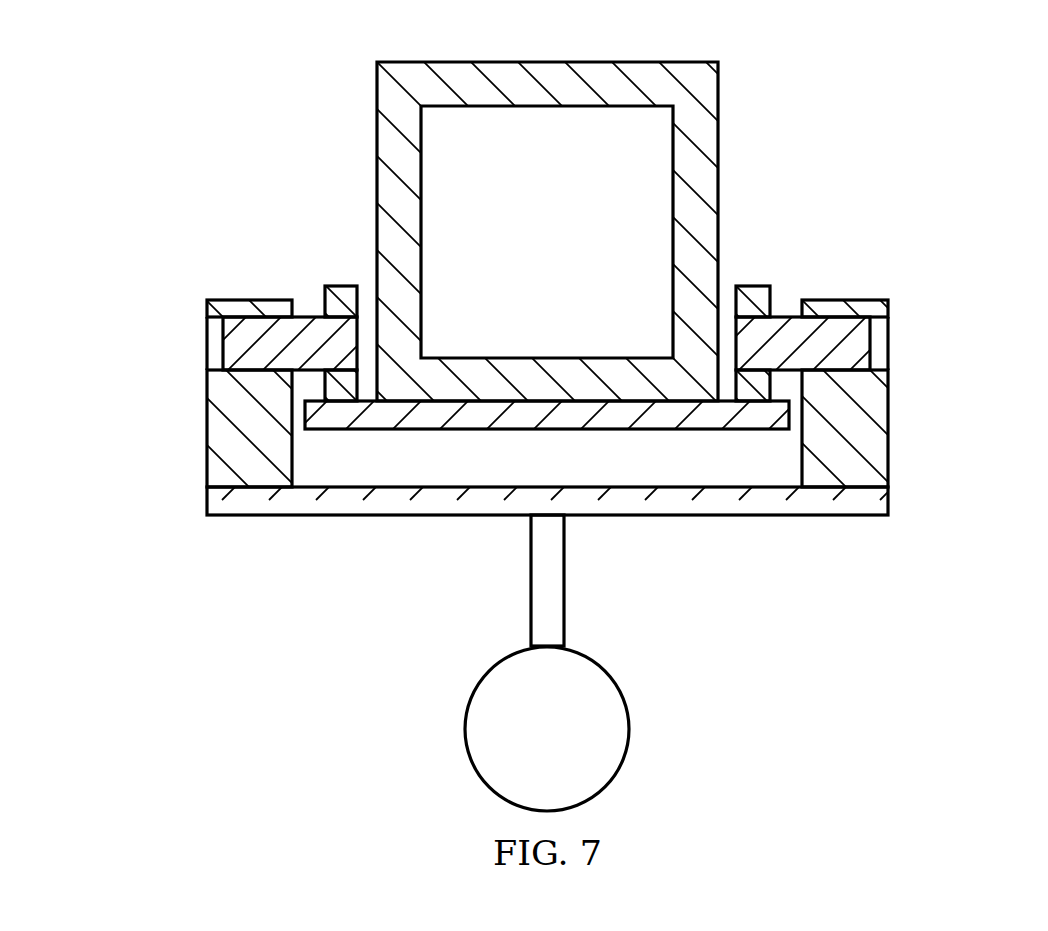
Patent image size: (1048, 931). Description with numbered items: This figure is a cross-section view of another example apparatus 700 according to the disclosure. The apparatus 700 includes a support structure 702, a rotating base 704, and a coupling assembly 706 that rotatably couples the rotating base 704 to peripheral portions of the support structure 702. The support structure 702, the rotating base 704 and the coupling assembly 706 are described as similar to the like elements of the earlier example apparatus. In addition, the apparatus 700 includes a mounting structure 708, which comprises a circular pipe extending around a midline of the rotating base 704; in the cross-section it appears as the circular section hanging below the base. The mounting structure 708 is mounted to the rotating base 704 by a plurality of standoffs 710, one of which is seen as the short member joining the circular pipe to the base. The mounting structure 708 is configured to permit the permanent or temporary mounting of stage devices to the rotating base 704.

The apparatus 700 is at (842, 72).
The support structure 702 is at (332, 183).
The rotating base 704 is at (932, 543).
The coupling assembly 706 is at (217, 256).
The mounting structure 708 is at (622, 730).
The standoffs 710 is at (541, 596).